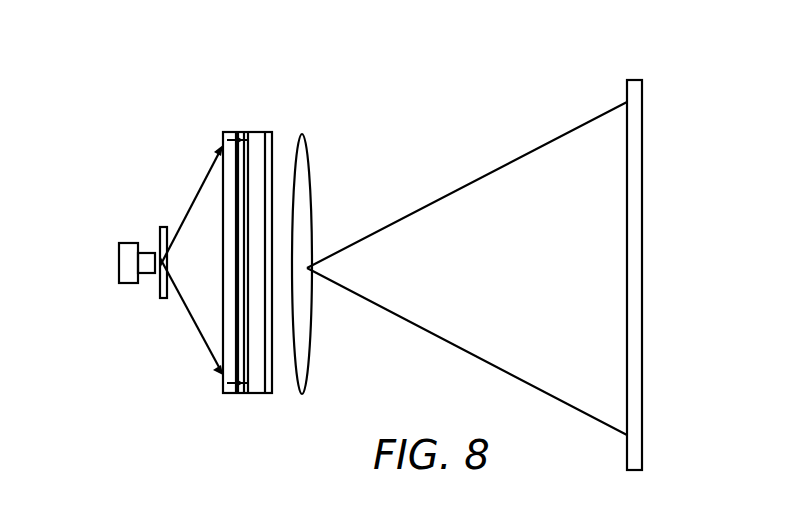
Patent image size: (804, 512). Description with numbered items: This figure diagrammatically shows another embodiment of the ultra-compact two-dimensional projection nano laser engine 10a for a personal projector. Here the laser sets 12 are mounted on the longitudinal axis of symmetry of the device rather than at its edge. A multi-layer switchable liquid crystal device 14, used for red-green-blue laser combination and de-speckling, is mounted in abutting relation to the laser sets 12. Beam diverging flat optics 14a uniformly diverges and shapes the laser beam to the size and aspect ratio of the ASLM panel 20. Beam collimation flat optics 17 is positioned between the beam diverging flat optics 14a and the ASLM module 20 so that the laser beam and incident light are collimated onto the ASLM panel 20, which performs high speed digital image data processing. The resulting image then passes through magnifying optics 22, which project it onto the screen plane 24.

The ultra-compact 2-D projection nano laser engine 10a is at (174, 121).
The laser sets 12 is at (118, 262).
The multi-layer switchable liquid crystal device 14 is at (147, 252).
The beam diverging flat optics 14a is at (158, 227).
The beam collimation flat optics 17 is at (223, 315).
The advanced spatial light modulation module 20 is at (258, 133).
The magnifying optics 22 is at (312, 175).
The screen plane 24 is at (642, 231).